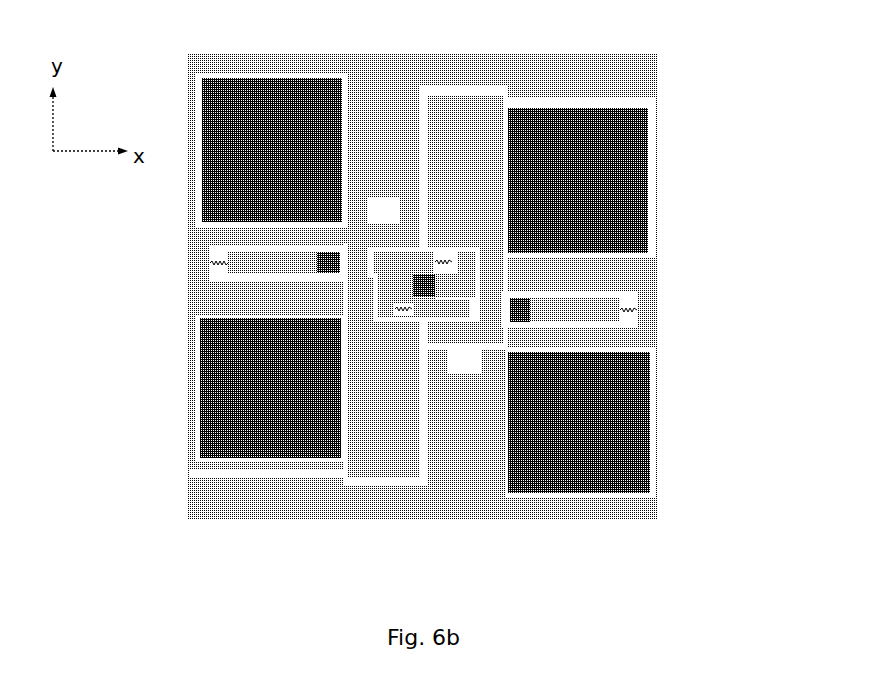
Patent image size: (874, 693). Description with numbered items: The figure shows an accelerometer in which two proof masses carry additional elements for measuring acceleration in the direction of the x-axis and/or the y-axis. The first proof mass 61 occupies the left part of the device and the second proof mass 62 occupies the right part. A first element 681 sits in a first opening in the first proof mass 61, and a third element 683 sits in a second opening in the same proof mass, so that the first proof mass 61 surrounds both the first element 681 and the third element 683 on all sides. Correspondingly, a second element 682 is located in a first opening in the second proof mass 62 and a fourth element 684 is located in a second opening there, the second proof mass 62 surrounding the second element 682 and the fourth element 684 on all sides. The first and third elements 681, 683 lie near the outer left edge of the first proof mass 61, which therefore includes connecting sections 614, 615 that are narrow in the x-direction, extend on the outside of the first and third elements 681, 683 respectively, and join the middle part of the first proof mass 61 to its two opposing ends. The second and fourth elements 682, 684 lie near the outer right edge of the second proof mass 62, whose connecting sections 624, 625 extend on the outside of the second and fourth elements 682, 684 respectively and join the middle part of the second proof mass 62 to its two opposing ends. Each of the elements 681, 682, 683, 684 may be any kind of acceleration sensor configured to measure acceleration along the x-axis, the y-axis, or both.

The first proof mass 61 is at (362, 66).
The second proof mass 62 is at (482, 503).
The connecting section 614 is at (181, 199).
The connecting section 615 is at (180, 404).
The connecting section 624 is at (662, 427).
The connecting section 625 is at (667, 173).
The first element 681 is at (272, 150).
The second element 682 is at (579, 422).
The third element 683 is at (270, 388).
The fourth element 684 is at (578, 180).